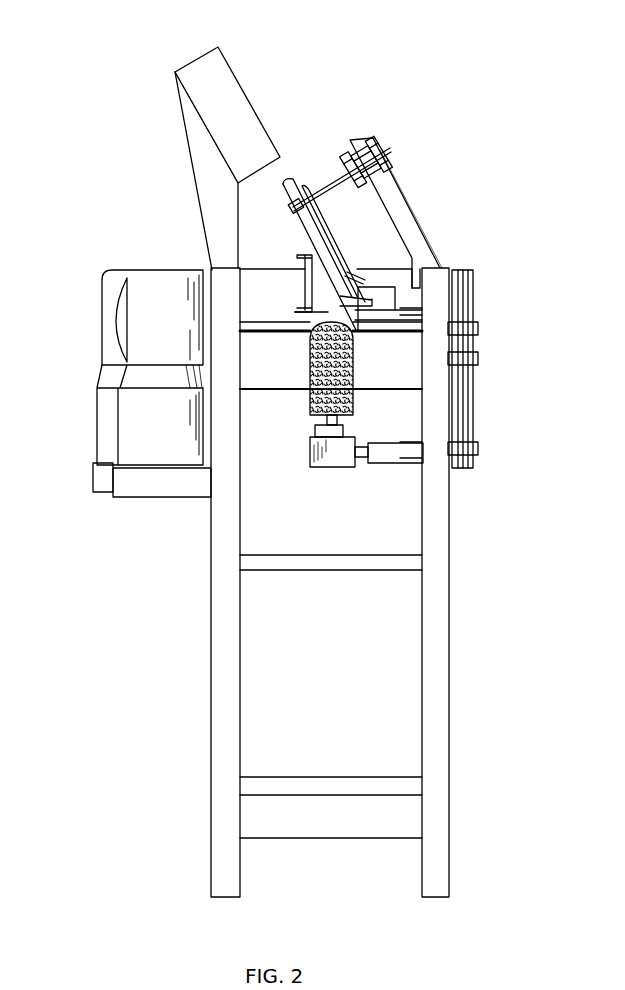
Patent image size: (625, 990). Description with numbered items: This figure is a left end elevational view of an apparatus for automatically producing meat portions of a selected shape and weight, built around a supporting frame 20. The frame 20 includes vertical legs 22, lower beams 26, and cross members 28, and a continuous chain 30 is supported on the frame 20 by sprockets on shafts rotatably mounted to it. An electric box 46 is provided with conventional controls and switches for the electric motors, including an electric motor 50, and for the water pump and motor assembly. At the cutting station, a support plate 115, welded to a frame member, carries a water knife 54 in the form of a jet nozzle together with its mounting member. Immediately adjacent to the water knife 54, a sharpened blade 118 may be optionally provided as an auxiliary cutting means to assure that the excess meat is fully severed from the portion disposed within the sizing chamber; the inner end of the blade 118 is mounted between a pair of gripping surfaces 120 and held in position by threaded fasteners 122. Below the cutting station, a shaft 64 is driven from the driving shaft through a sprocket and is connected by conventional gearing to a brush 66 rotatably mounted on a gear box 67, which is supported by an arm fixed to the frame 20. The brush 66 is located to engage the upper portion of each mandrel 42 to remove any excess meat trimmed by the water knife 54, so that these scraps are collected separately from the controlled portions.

The supporting frame 20 is at (470, 522).
The vertical legs 22 is at (217, 745).
The lower beams 26 is at (377, 780).
The cross members 28 is at (328, 568).
The continuous chain 30 is at (147, 497).
The mandrel 42 is at (296, 178).
The electric box 46 is at (195, 65).
The electric motor 50 is at (100, 403).
The water knife 54 is at (360, 178).
The shaft 64 is at (395, 460).
The brush 66 is at (312, 405).
The gear box 67 is at (320, 467).
The support plate 115 is at (420, 233).
The sharpened blade 118 is at (318, 190).
The gripping surfaces 120 is at (387, 157).
The threaded fasteners 122 is at (373, 142).